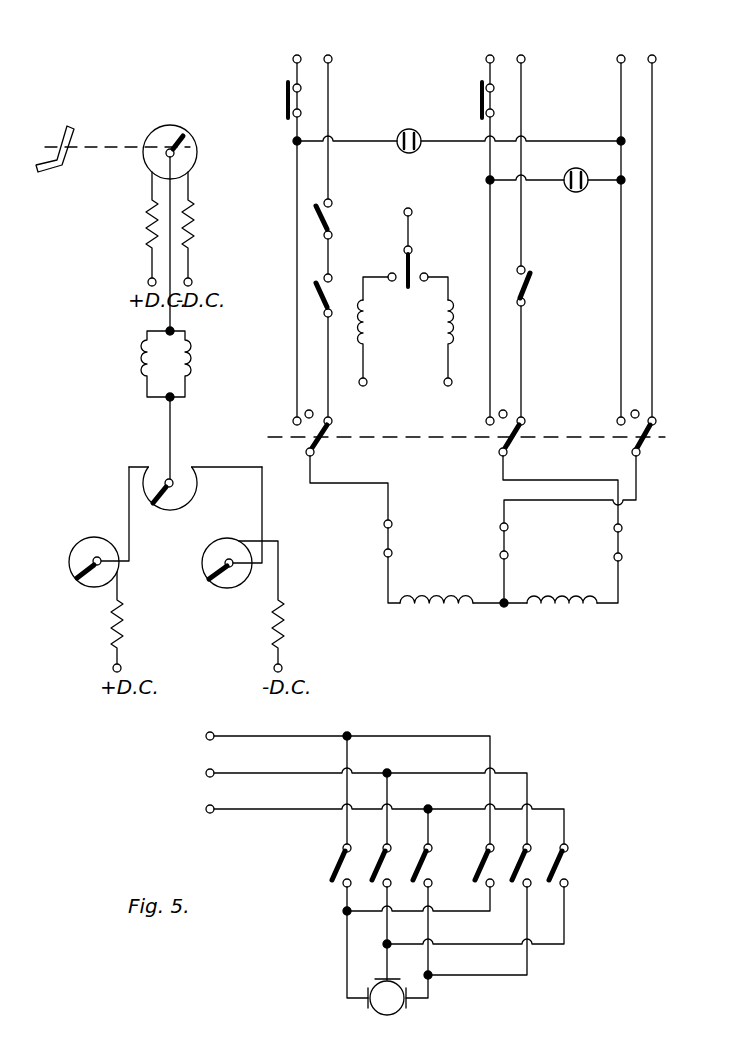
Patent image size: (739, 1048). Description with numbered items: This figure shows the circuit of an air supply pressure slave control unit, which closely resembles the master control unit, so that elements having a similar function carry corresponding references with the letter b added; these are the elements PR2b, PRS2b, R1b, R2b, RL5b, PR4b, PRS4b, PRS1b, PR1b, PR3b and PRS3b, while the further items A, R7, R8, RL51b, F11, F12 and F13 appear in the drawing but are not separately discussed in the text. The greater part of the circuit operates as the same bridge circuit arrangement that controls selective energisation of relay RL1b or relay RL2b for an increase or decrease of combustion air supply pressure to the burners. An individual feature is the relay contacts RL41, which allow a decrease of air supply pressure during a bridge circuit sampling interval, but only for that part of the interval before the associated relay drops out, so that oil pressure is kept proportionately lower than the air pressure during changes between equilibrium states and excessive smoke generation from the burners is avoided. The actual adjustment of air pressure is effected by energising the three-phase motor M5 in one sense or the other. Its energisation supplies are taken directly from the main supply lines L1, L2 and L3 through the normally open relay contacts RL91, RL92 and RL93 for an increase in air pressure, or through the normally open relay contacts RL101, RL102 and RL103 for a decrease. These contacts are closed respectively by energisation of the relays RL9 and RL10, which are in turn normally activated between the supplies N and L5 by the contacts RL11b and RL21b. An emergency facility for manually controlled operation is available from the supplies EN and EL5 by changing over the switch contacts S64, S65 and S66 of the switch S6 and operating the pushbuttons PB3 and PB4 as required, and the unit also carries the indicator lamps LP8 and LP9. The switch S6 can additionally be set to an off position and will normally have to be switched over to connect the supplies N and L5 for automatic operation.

The light beam / actuating lever A is at (63, 135).
The photo-relay PR2b is at (148, 138).
The photo-relay switch contact PRS2b is at (208, 125).
The resistor R1b is at (147, 203).
The resistor R2b is at (194, 205).
The relay coil RL5b is at (134, 364).
The photo-relay PR4b is at (212, 460).
The photo-relay switch contact PRS4b is at (156, 485).
The photo-relay switch contact PRS1b is at (88, 541).
The photo-relay PR1b is at (82, 583).
The resistor R7 is at (111, 632).
The photo-relay PR3b is at (249, 583).
The photo-relay switch contact PRS3b is at (234, 603).
The resistor R8 is at (289, 622).
The emergency supply EL5 is at (296, 55).
The supply L5 is at (328, 55).
The emergency supply EN is at (621, 55).
The supply N is at (652, 55).
The pushbutton PB4 is at (282, 103).
The pushbutton PB3 is at (476, 103).
The indicator lamp LP9 is at (409, 129).
The indicator lamp LP8 is at (576, 192).
The relay contacts RL41 is at (314, 214).
The relay contacts RL21b is at (315, 296).
The relay contacts RL11b is at (529, 292).
The relay contact RL51b is at (411, 271).
The relay RL1b is at (443, 323).
The relay RL2b is at (368, 336).
The switch S6 is at (442, 436).
The switch contact S65 is at (319, 439).
The switch contact S64 is at (510, 437).
The switch contact S66 is at (643, 434).
The fuse F12 is at (392, 542).
The fuse F13 is at (508, 543).
The fuse F11 is at (621, 543).
The relay RL10 is at (445, 612).
The relay RL9 is at (572, 612).
The main supply line L1 is at (332, 784).
The main supply line L2 is at (350, 803).
The main supply line L3 is at (369, 821).
The normally open relay contacts RL101 is at (341, 852).
The normally open relay contacts RL102 is at (383, 846).
The normally open relay contacts RL103 is at (425, 846).
The normally open relay contacts RL93 is at (486, 852).
The normally open relay contacts RL92 is at (515, 866).
The normally open relay contacts RL91 is at (565, 866).
The motor M5 is at (401, 1001).